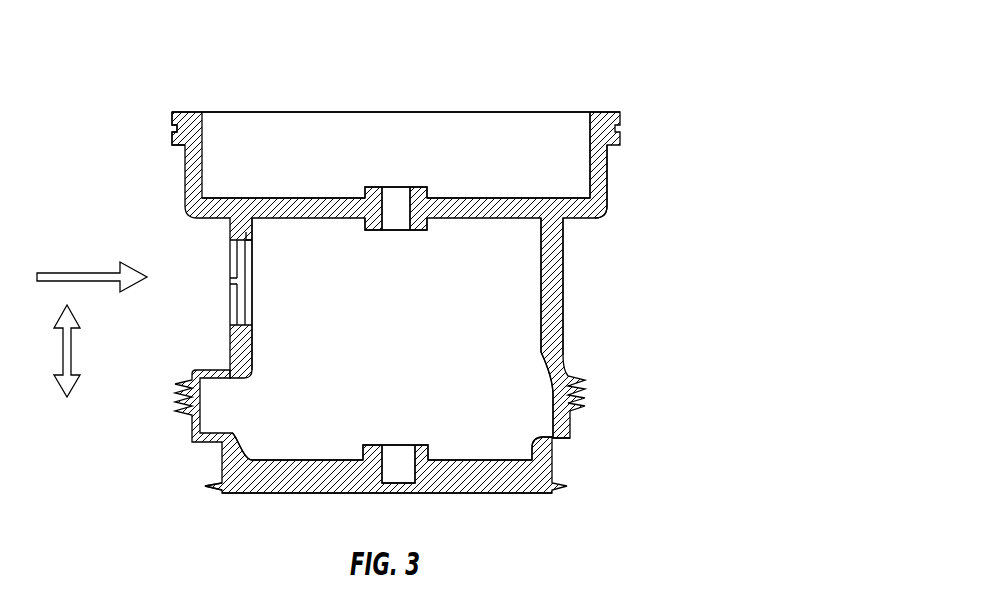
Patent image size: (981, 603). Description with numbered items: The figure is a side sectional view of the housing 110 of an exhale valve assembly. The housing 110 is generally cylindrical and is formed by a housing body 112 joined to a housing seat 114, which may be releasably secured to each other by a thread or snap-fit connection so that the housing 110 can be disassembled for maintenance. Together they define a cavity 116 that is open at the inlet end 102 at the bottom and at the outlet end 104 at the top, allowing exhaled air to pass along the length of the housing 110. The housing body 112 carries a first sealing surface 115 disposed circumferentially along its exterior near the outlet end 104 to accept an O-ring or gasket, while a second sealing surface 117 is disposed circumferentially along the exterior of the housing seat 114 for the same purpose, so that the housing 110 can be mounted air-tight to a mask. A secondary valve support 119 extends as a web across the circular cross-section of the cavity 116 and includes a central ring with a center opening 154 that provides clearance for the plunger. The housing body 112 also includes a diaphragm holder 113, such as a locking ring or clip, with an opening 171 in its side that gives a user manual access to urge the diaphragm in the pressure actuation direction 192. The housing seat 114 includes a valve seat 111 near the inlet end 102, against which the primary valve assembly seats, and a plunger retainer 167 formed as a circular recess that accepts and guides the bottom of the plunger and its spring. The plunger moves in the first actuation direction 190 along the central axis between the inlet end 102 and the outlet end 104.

The inlet end 102 is at (148, 481).
The outlet end 104 is at (175, 86).
The housing 110 is at (525, 53).
The valve seat 111 is at (236, 434).
The housing body 112 is at (612, 190).
The diaphragm holder 113 is at (254, 241).
The housing seat 114 is at (552, 462).
The first sealing surface 115 is at (172, 128).
The cavity 116 is at (490, 292).
The second sealing surface 117 is at (206, 490).
The secondary valve support 119 is at (452, 196).
The center opening 154 is at (396, 199).
The plunger retainer 167 is at (413, 458).
The opening 171 is at (228, 282).
The first actuation direction 190 is at (72, 348).
The pressure actuation direction 192 is at (97, 270).